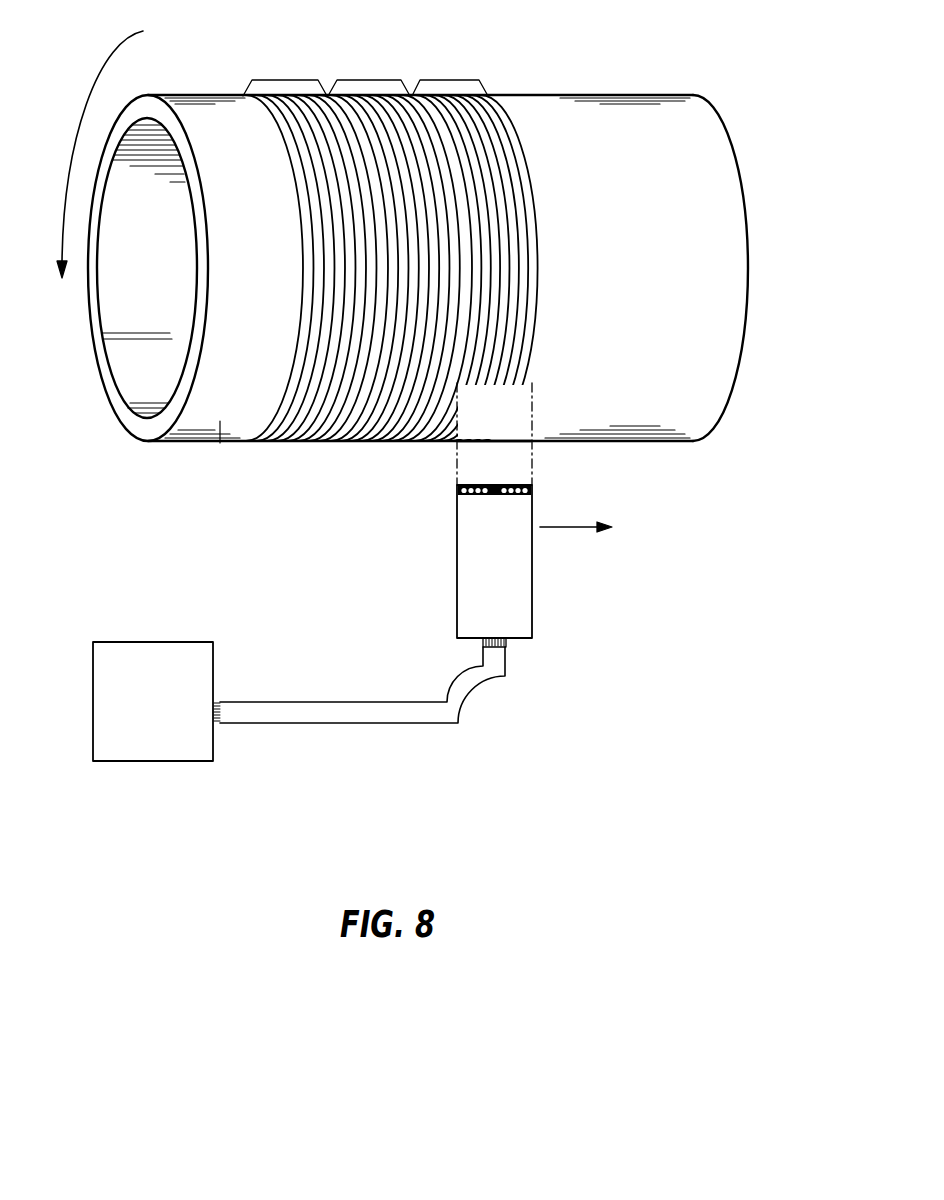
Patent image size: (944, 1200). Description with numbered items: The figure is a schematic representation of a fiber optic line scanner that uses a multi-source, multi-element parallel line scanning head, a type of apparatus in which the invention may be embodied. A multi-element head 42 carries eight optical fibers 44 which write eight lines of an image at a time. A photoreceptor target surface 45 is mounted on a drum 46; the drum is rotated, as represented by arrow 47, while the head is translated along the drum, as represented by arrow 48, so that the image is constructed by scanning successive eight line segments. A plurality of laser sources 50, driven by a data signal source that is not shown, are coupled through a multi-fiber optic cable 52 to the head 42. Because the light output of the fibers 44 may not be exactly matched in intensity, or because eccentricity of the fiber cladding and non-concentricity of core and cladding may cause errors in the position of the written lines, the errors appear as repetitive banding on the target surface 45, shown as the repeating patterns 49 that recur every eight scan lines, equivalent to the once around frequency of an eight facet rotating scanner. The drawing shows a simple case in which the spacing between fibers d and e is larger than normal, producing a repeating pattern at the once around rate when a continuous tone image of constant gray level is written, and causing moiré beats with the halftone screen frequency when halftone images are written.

The multi-element head 42 is at (532, 557).
The optical fibers 44 is at (468, 495).
The photoreceptor target surface 45 is at (219, 443).
The drum 46 is at (107, 409).
The arrow 47 is at (94, 85).
The arrow 48 is at (568, 527).
The patterns 49 is at (448, 72).
The laser sources 50 is at (162, 762).
The multi-fiber optic cable 52 is at (493, 702).